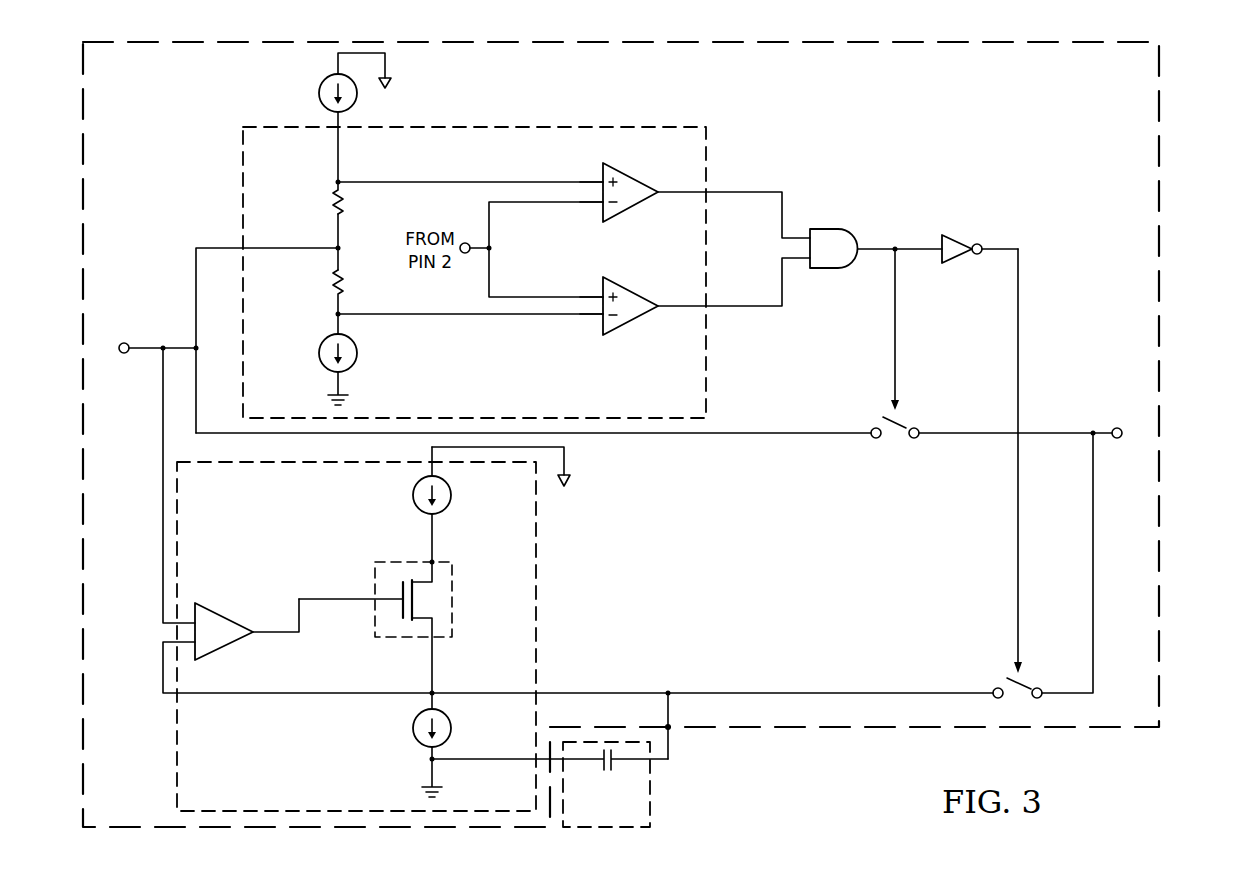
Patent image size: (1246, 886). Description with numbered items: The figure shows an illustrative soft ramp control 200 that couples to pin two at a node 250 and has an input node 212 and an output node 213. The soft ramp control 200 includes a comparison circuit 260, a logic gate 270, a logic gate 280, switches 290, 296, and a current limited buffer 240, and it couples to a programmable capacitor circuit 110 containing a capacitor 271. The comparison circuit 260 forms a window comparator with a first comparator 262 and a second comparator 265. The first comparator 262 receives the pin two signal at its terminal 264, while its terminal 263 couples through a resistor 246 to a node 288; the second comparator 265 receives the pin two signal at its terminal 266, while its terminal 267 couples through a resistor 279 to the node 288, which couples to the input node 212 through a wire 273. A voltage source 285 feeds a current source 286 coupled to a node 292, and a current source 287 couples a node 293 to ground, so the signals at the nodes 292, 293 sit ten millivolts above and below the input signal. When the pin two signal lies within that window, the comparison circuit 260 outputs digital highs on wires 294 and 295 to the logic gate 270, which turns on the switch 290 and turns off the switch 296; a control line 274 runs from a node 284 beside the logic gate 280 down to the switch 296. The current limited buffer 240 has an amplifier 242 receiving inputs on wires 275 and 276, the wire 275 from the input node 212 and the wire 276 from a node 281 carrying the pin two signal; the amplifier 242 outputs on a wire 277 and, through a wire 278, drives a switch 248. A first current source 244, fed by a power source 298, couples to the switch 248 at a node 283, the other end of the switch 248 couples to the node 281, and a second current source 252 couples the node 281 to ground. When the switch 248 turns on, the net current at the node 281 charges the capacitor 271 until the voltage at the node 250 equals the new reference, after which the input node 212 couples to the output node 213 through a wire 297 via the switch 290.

The soft ramp control 200 is at (1160, 223).
The programmable capacitor circuit 110 is at (651, 791).
The input node 212 is at (122, 342).
The output node 213 is at (1118, 427).
The current limited buffer 240 is at (178, 739).
The amplifier 242 is at (223, 614).
The first current source 244 is at (413, 494).
The resistor 246 is at (341, 212).
The switch 248 is at (454, 612).
The node 250 is at (669, 691).
The second current source 252 is at (413, 729).
The comparison circuit 260 is at (244, 187).
The first comparator 262 is at (610, 191).
The terminal 263 is at (598, 180).
The terminal 264 is at (598, 208).
The second comparator 265 is at (610, 305).
The terminal 266 is at (598, 295).
The terminal 267 is at (598, 321).
The logic gate 270 is at (830, 228).
The capacitor 271 is at (607, 772).
The wire 273 is at (222, 247).
The control line 274 is at (1020, 354).
The wire 275 is at (162, 475).
The wire 276 is at (162, 666).
The wire 277 is at (280, 634).
The wire 278 is at (338, 598).
The resistor 279 is at (341, 285).
The logic gate 280 is at (956, 240).
The node 281 is at (430, 692).
The node 283 is at (430, 561).
The node 284 is at (898, 246).
The voltage source 285 is at (388, 90).
The current source 286 is at (319, 92).
The current source 287 is at (319, 352).
The node 288 is at (335, 246).
The switch 290 is at (906, 427).
The node 292 is at (335, 181).
The node 293 is at (335, 313).
The wire 294 is at (735, 191).
The wire 295 is at (735, 305).
The switch 296 is at (1030, 688).
The wire 297 is at (785, 432).
The power source 298 is at (569, 482).